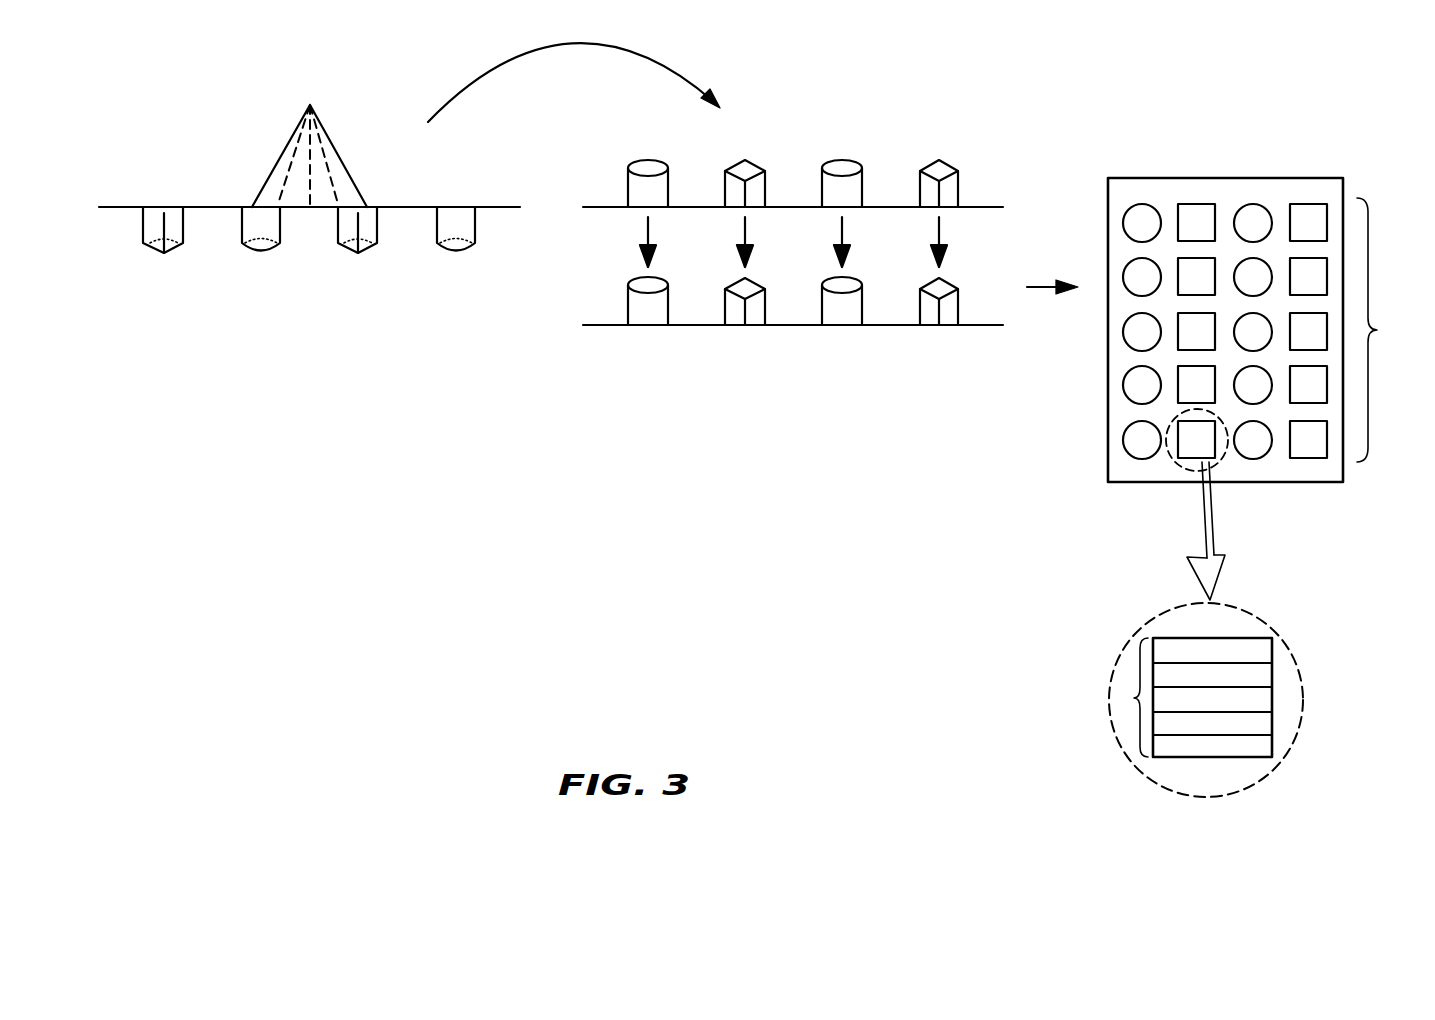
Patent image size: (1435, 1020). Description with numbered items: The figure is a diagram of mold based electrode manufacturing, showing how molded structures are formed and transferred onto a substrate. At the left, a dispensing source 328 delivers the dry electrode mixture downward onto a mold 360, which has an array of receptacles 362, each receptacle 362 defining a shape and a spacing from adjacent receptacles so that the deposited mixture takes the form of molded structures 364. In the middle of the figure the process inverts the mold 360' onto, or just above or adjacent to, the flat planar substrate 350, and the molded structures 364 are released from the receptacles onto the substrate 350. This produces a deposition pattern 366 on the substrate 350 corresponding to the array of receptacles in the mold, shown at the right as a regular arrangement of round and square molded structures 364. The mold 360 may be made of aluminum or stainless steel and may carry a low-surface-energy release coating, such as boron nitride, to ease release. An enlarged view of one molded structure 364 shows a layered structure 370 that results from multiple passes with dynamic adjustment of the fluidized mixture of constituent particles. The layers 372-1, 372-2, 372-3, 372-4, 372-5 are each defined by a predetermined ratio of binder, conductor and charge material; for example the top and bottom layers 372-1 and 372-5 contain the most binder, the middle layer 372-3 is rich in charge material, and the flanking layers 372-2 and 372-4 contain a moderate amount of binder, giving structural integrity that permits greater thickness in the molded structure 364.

The light source / beam 328 is at (285, 149).
The mold 360 is at (309, 291).
The receptacles 362 is at (452, 254).
The inverted mold 360' is at (827, 176).
The substrate 350 is at (603, 325).
The molded structures 364 is at (725, 292).
The deposition pattern 366 is at (1378, 330).
The layered structure 370 is at (1134, 698).
The top layer 372-1 is at (1273, 651).
The layer flanking the middle layer 372-2 is at (1273, 676).
The middle layer 372-3 is at (1273, 698).
The layer flanking the middle layer 372-4 is at (1273, 720).
The bottom layer 372-5 is at (1273, 745).